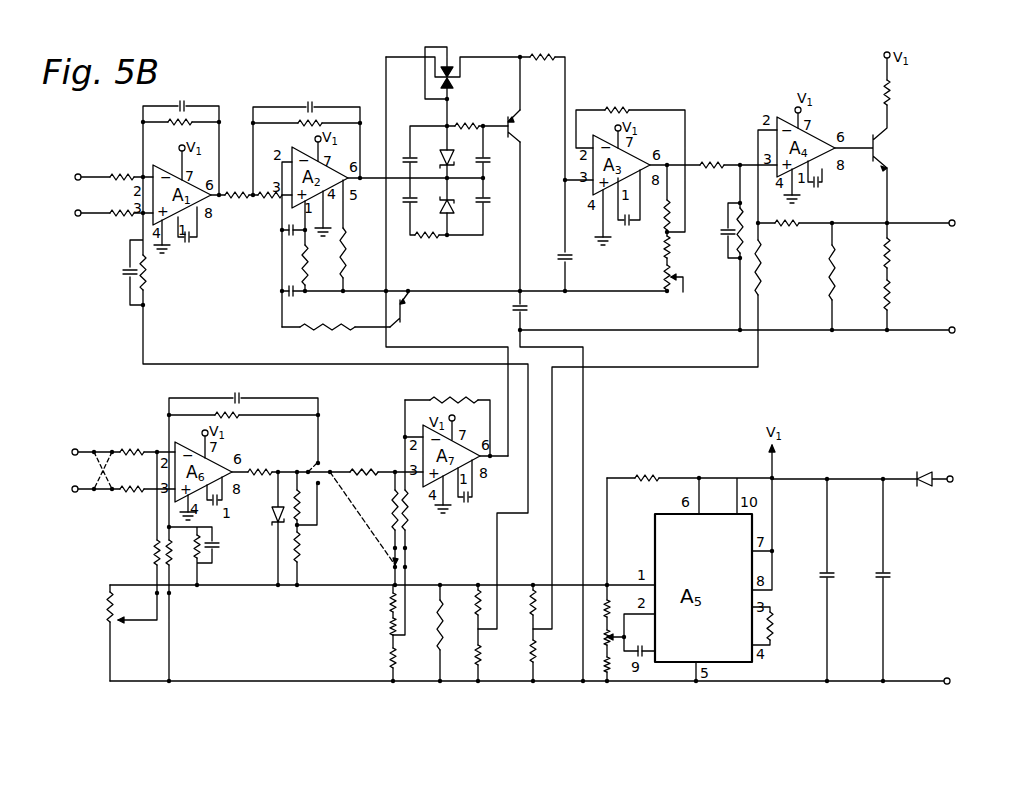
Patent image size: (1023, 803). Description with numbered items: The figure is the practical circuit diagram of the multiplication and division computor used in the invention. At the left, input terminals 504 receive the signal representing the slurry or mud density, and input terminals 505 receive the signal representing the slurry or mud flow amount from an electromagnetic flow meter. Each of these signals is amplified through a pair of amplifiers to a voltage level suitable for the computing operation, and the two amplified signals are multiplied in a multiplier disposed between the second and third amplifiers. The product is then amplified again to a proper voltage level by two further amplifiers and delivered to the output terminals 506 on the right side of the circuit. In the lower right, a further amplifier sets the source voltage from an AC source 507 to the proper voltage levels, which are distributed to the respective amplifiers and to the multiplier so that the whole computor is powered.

The input terminals 504 is at (72, 170).
The input terminals 505 is at (72, 445).
The output terminals 506 is at (957, 213).
The AC source 507 is at (957, 473).